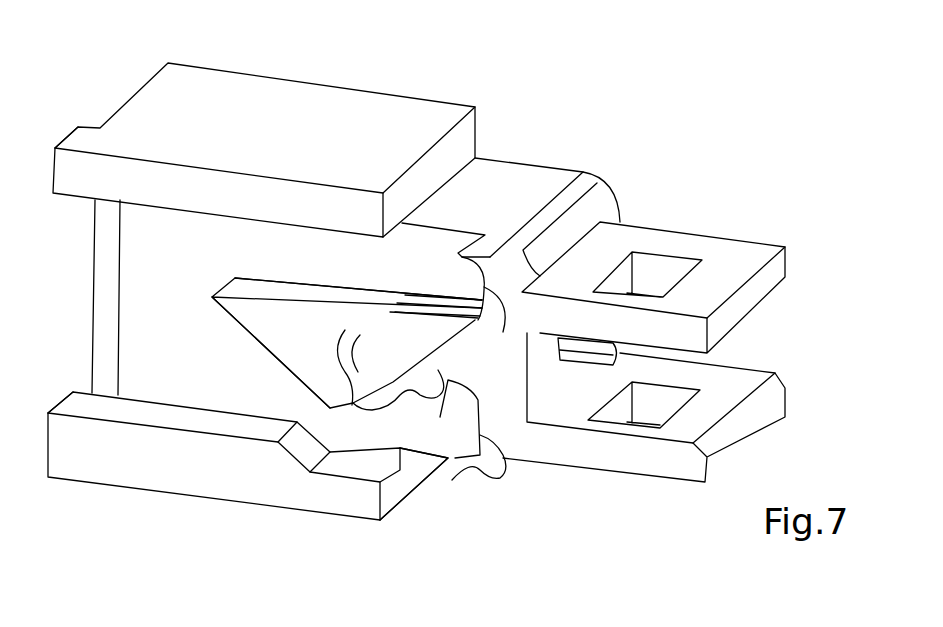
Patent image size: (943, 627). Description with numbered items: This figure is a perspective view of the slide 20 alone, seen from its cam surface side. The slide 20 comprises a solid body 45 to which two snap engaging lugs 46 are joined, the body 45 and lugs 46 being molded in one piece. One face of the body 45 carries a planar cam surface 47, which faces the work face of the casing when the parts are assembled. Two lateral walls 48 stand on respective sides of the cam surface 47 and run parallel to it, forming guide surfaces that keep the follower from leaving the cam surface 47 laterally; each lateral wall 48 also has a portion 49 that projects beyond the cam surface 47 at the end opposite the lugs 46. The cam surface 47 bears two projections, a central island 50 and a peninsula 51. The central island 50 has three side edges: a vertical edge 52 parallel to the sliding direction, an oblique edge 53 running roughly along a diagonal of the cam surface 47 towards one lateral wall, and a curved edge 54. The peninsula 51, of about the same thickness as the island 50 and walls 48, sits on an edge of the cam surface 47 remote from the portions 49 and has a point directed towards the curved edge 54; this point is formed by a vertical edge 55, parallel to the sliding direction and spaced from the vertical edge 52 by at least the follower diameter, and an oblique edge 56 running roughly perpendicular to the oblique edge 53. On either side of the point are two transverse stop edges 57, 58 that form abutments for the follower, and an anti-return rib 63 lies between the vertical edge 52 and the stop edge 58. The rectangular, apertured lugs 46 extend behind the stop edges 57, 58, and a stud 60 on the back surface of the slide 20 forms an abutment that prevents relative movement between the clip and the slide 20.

The slide 20 is at (433, 493).
The body 45 is at (400, 281).
The snap engaging lugs 46 is at (730, 257).
The cam surface 47 is at (157, 260).
The lateral walls 48 is at (284, 100).
The projecting portion 49 is at (75, 140).
The central island 50 is at (252, 318).
The peninsula 51 is at (448, 380).
The vertical edge 52 is at (288, 290).
The oblique edge 53 is at (270, 353).
The curved edge 54 is at (343, 352).
The vertical edge 55 is at (423, 392).
The oblique edge 56 is at (435, 340).
The stop edge 57 is at (503, 475).
The stop edge 58 is at (487, 295).
The stud 60 is at (583, 360).
The anti-return rib 63 is at (413, 287).